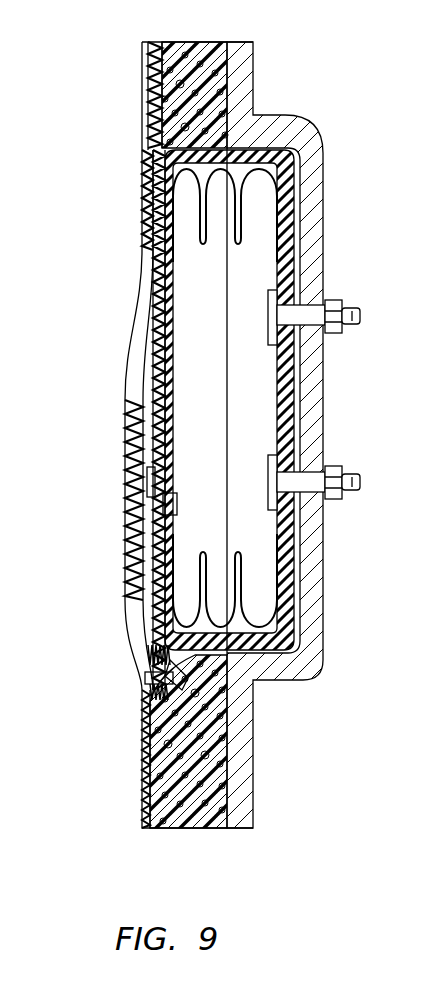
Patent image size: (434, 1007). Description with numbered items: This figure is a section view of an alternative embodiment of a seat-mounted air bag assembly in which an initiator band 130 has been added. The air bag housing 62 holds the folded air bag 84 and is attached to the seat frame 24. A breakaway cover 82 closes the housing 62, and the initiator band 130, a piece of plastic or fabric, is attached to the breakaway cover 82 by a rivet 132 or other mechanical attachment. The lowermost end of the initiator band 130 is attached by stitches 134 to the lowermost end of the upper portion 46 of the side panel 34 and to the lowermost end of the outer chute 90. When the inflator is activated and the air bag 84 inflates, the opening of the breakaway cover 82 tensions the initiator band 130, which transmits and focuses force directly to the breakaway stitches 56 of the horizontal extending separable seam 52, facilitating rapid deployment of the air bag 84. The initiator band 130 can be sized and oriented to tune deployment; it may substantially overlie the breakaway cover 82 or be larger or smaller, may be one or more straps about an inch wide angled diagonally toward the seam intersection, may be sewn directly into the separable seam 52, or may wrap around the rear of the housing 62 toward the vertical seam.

The seat frame 24 is at (245, 97).
The side panel 34 is at (150, 262).
The upper portion of the side panel 46 is at (124, 388).
The horizontal extending separable seam 52 is at (145, 700).
The breakaway stitches 56 is at (143, 698).
The air bag housing 62 is at (303, 270).
The breakaway cover 82 is at (176, 332).
The air bag 84 is at (250, 228).
The outer chute 90 is at (140, 428).
The initiator band 130 is at (152, 570).
The rivet 132 is at (172, 500).
The stitches 134 is at (142, 655).